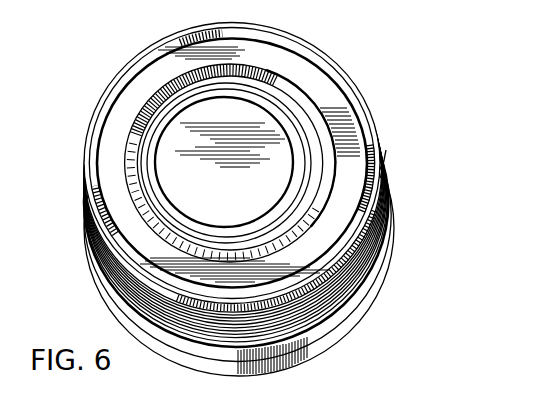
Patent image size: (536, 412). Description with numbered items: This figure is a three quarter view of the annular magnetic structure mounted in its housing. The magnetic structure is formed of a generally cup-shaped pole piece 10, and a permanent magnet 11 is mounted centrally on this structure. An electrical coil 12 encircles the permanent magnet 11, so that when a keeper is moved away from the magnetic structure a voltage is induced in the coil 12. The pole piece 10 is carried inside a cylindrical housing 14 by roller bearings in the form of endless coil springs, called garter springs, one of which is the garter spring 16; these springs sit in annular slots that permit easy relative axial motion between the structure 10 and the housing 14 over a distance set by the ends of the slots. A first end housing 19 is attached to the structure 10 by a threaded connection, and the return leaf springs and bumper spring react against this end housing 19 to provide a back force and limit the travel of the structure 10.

The pole piece 10 is at (334, 98).
The permanent magnet 11 is at (205, 209).
The electrical coil 12 is at (283, 100).
The cylindrical housing 14 is at (381, 202).
The roller bearing 16 is at (358, 126).
The first end housing 19 is at (362, 302).